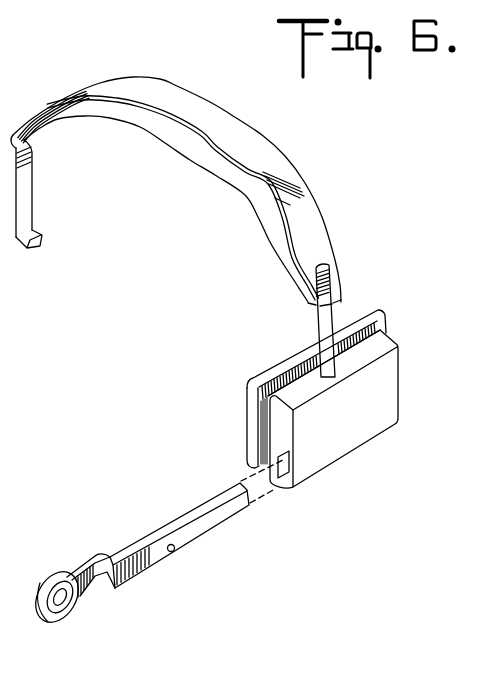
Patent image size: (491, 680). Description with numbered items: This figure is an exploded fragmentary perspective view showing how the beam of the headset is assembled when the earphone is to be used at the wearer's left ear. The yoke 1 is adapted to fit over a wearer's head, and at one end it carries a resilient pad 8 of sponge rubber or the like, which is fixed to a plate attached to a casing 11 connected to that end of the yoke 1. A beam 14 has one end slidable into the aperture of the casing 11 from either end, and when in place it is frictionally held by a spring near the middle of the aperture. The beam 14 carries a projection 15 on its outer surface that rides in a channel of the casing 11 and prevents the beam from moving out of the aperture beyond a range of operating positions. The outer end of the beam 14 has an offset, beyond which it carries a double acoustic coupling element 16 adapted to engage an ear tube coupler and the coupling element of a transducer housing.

The yoke 1 is at (337, 305).
The resilient pad 8 is at (274, 370).
The casing 11 is at (358, 427).
The beam 14 is at (213, 515).
The projection 15 is at (172, 552).
The double acoustic coupling element 16 is at (65, 612).